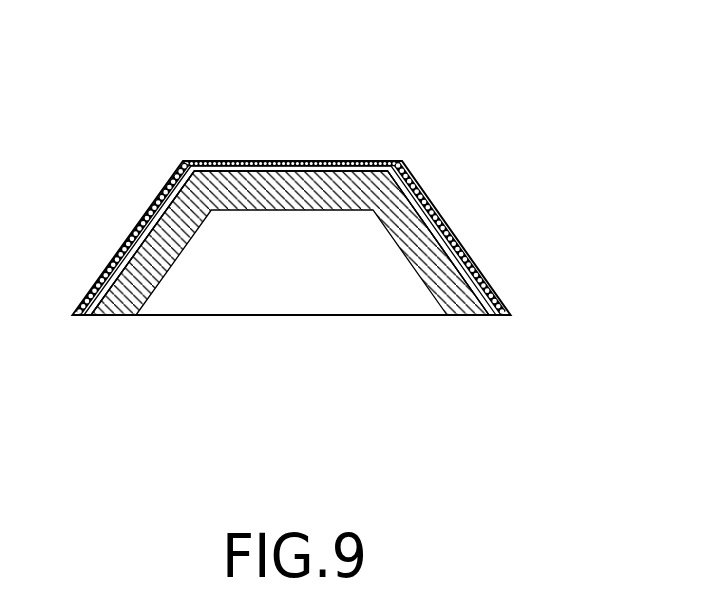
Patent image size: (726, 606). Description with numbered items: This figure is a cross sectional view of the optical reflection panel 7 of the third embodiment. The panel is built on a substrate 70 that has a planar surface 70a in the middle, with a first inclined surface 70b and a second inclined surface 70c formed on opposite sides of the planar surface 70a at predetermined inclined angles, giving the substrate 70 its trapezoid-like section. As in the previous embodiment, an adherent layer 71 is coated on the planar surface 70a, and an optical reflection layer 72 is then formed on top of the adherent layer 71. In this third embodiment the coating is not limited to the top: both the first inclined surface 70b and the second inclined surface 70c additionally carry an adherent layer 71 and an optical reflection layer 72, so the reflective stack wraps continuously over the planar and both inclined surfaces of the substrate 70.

The optical reflection panel 7 is at (428, 104).
The substrate 70 is at (472, 313).
The planar surface 70a is at (249, 160).
The first inclined surface 70b is at (153, 204).
The second inclined surface 70c is at (437, 207).
The adherent layer 71 is at (290, 160).
The optical reflection layer 72 is at (351, 160).